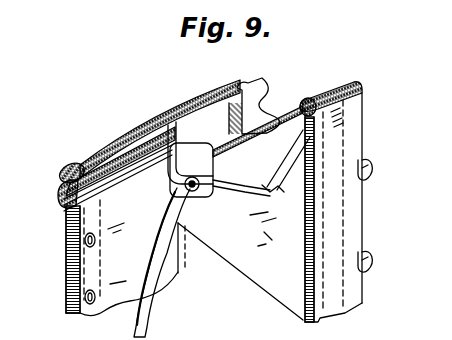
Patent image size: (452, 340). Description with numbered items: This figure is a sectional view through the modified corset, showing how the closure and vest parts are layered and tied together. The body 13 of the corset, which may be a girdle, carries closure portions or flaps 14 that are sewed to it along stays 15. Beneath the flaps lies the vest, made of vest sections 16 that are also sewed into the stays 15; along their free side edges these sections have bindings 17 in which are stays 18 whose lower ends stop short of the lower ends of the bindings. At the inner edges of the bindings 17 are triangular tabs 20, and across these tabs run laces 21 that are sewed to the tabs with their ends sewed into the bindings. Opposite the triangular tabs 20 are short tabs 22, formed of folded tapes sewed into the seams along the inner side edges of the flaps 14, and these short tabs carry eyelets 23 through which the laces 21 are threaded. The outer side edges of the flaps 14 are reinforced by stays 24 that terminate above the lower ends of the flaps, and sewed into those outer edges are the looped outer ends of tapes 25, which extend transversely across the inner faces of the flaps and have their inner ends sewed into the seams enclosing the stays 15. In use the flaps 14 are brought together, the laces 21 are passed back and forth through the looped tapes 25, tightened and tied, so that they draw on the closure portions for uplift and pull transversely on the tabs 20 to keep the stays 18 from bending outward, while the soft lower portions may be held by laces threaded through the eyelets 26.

The body 13 is at (260, 92).
The closure portions or flaps 14 is at (130, 152).
The stays 15 is at (208, 100).
The vest sections 16 is at (288, 128).
The bindings 17 is at (333, 150).
The stays 18 is at (343, 88).
The triangular tabs 20 is at (282, 158).
The laces 21 is at (243, 189).
The short tabs 22 is at (125, 258).
The eyelets 23 is at (165, 188).
The stays 24 is at (82, 165).
The tapes 25 is at (132, 148).
The eyelets 26 is at (85, 243).